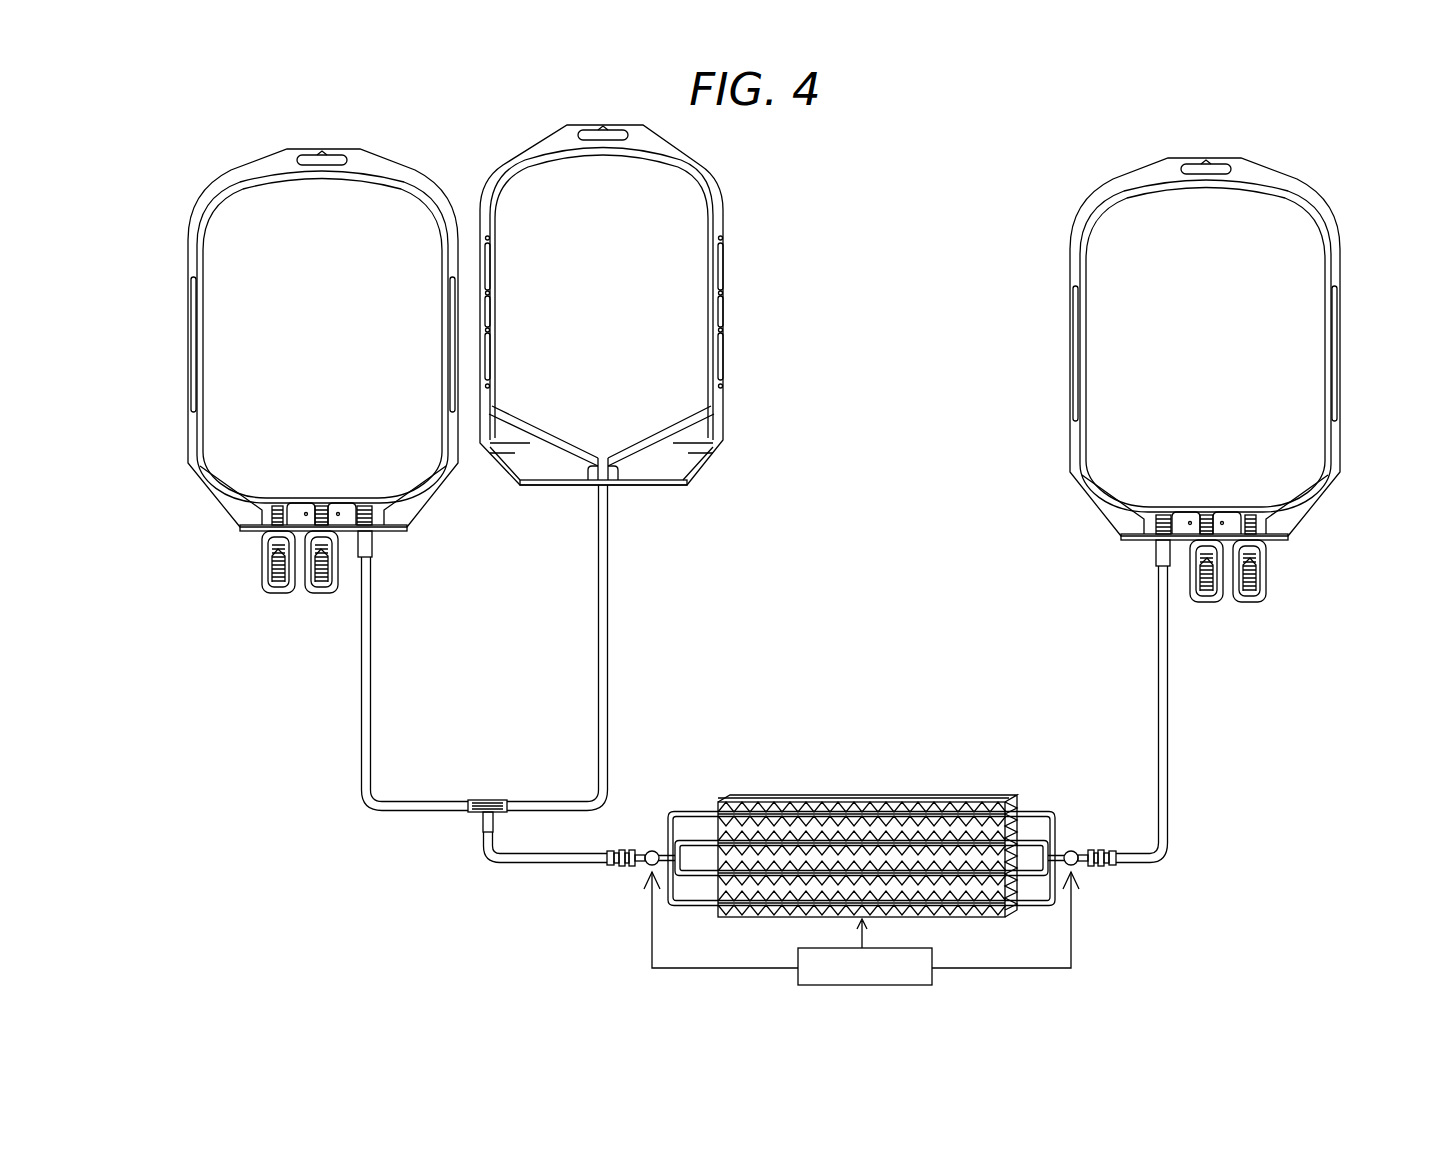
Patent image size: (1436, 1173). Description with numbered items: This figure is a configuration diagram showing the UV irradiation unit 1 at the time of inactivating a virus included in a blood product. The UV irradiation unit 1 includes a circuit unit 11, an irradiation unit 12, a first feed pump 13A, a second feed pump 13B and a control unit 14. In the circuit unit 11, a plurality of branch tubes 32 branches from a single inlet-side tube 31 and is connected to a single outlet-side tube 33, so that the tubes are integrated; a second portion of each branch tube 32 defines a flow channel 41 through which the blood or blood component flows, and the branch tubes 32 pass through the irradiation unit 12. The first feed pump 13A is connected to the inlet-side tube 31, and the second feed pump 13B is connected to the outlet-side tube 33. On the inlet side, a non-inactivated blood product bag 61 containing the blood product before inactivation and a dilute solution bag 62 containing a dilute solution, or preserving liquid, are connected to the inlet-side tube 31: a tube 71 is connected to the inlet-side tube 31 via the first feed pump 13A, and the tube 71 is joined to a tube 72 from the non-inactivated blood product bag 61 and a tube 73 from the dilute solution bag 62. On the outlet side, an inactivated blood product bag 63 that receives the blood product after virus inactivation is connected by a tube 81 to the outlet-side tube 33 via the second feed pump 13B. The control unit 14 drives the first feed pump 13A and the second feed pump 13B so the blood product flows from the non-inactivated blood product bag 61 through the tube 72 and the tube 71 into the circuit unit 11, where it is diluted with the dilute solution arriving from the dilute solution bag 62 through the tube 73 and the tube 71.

The UV irradiation unit 1 is at (869, 829).
The circuit unit 11 is at (1060, 808).
The irradiation unit 12 is at (869, 790).
The first feed pump 13A is at (650, 868).
The second feed pump 13B is at (1077, 873).
The control unit 14 is at (931, 949).
The inlet-side tube 31 is at (665, 847).
The branch tube 32 is at (678, 826).
The flow channel 41 is at (685, 811).
The outlet-side tube 33 is at (1062, 850).
The non-inactivated blood product bag 61 is at (223, 512).
The dilute solution bag 62 is at (727, 396).
The inactivated blood product bag 63 is at (1342, 356).
The tube 71 is at (543, 863).
The tube 72 is at (372, 672).
The tube 73 is at (608, 613).
The tube 81 is at (1168, 693).